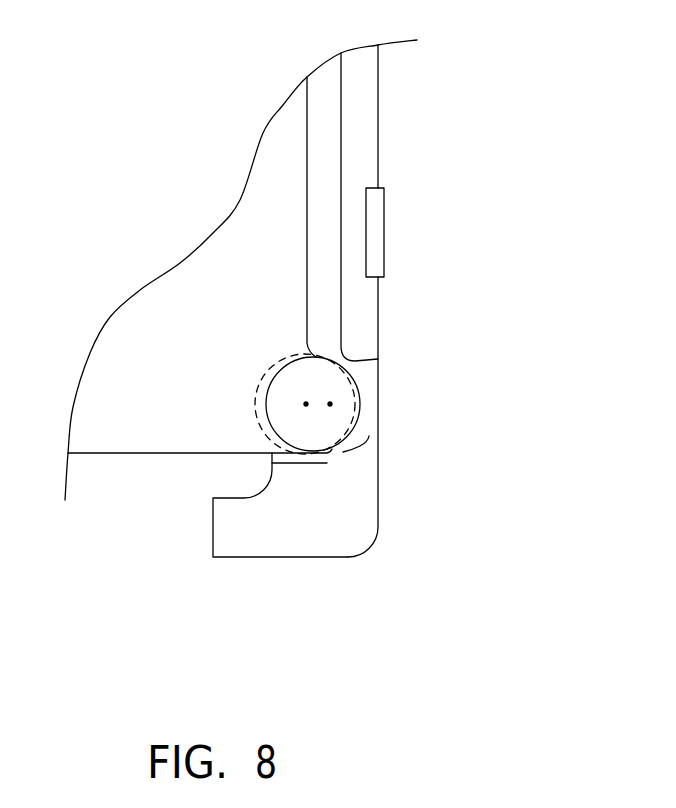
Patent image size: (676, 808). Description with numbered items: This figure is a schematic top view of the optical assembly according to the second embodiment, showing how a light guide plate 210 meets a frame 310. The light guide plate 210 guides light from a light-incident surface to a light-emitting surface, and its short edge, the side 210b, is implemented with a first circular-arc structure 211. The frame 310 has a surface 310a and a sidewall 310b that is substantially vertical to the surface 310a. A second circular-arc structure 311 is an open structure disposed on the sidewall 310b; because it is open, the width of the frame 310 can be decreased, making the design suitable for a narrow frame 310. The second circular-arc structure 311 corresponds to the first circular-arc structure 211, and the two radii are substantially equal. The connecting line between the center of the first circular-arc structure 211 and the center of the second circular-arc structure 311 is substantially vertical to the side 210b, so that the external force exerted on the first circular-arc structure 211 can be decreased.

The light guide plate 210 is at (142, 432).
The side of the light guide plate 210b is at (306, 148).
The first circular-arc structure 211 is at (322, 425).
The frame 310 is at (429, 301).
The surface 310a is at (368, 396).
The sidewall 310b is at (368, 343).
The second circular-arc structure 311 is at (350, 450).